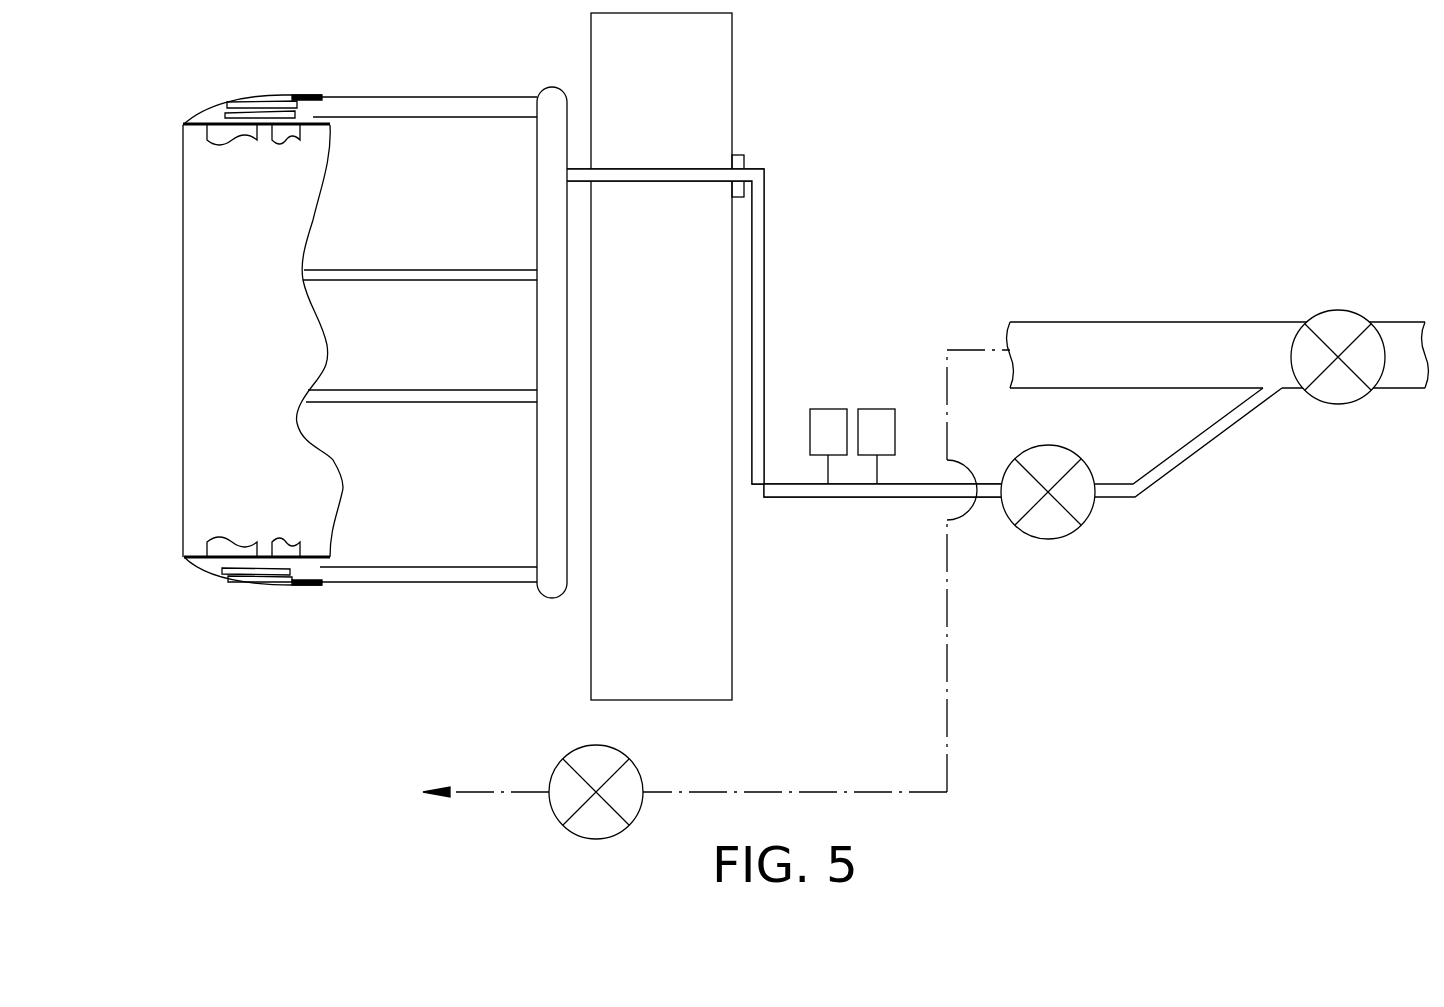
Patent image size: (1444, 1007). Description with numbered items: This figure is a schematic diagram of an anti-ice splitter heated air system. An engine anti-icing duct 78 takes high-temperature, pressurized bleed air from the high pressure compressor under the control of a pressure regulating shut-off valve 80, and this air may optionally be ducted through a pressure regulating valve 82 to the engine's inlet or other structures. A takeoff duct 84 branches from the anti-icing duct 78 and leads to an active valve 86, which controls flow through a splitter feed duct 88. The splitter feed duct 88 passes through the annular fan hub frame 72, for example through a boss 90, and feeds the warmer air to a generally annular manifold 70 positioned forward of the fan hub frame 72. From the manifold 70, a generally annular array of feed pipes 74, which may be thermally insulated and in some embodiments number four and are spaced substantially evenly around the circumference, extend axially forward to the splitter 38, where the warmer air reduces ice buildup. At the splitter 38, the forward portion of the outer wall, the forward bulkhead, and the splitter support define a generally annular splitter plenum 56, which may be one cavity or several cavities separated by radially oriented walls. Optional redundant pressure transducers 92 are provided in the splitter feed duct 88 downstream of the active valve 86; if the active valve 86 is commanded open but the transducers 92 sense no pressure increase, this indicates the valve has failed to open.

The splitter 38 is at (234, 307).
The splitter plenum 56 is at (213, 118).
The manifold 70 is at (544, 525).
The fan hub frame 72 is at (669, 467).
The feed pipes 74 is at (428, 90).
The engine anti-icing duct 78 is at (1155, 364).
The pressure regulating shut-off valve 80 is at (1307, 322).
The pressure regulating valve 82 is at (576, 757).
The takeoff duct 84 is at (1152, 513).
The active valve 86 is at (1066, 535).
The splitter feed duct 88 is at (645, 156).
The boss 90 is at (718, 200).
The pressure transducers 92 is at (826, 393).